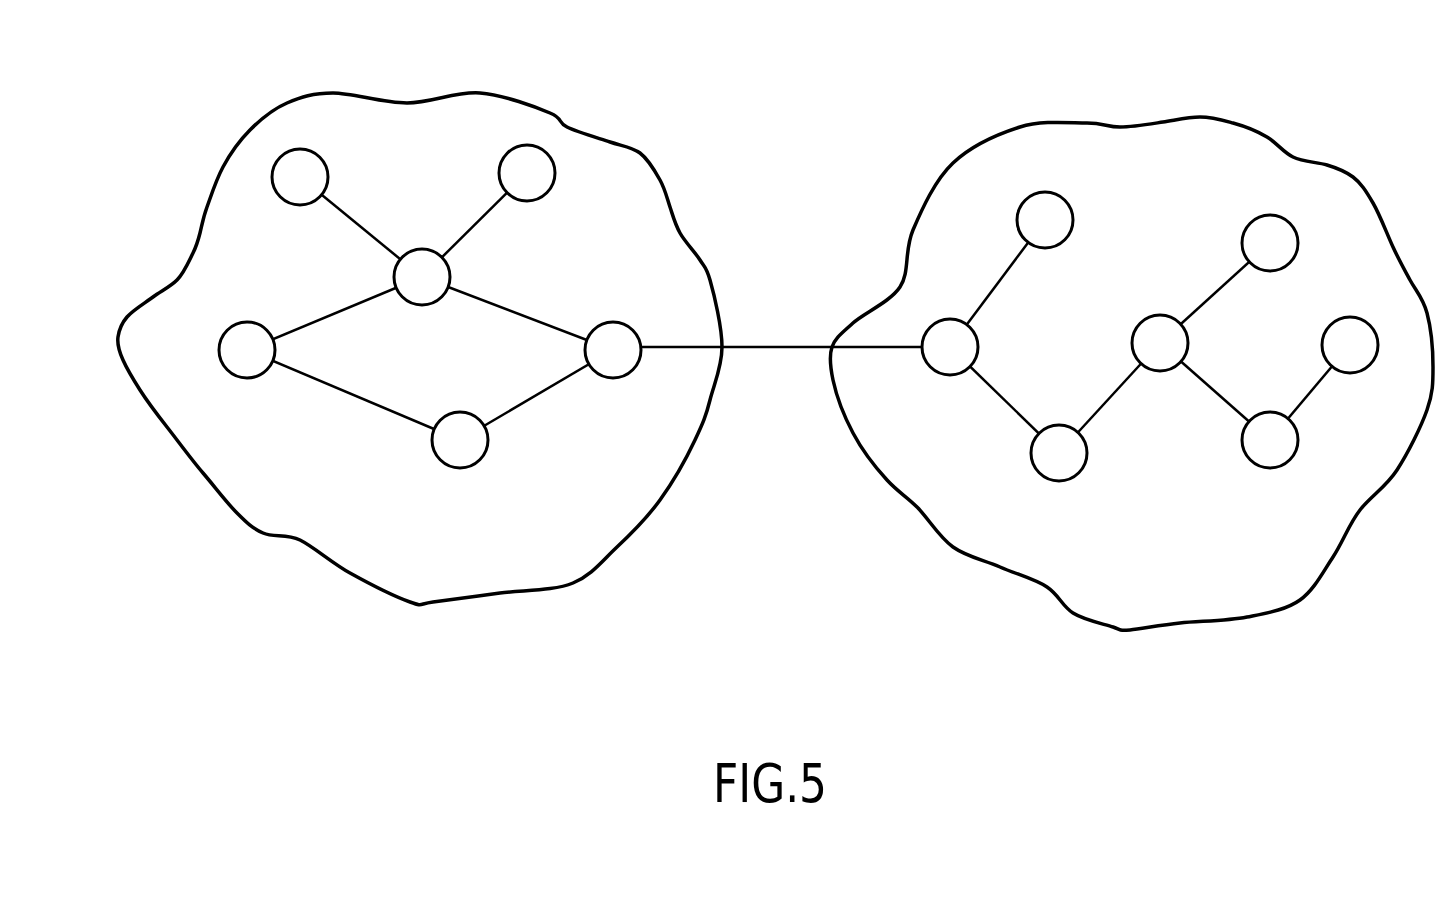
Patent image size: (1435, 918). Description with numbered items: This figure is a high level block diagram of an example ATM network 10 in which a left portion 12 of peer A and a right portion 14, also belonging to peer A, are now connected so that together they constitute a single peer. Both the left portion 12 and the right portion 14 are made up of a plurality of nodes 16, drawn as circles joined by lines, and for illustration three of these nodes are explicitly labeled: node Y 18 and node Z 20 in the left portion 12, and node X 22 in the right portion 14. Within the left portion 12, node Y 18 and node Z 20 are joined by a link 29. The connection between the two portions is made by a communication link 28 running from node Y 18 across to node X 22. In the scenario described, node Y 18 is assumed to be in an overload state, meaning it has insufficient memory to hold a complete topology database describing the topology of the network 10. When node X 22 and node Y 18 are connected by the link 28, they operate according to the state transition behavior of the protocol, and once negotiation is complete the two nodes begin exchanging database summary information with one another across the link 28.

The ATM network 10 is at (291, 678).
The left portion 12 is at (428, 100).
The right portion 14 is at (1140, 123).
The nodes 16 is at (330, 173).
The node Y 18 is at (610, 322).
The node Z 20 is at (490, 440).
The node X 22 is at (978, 345).
The communication link 28 is at (775, 345).
The link 29 is at (549, 385).